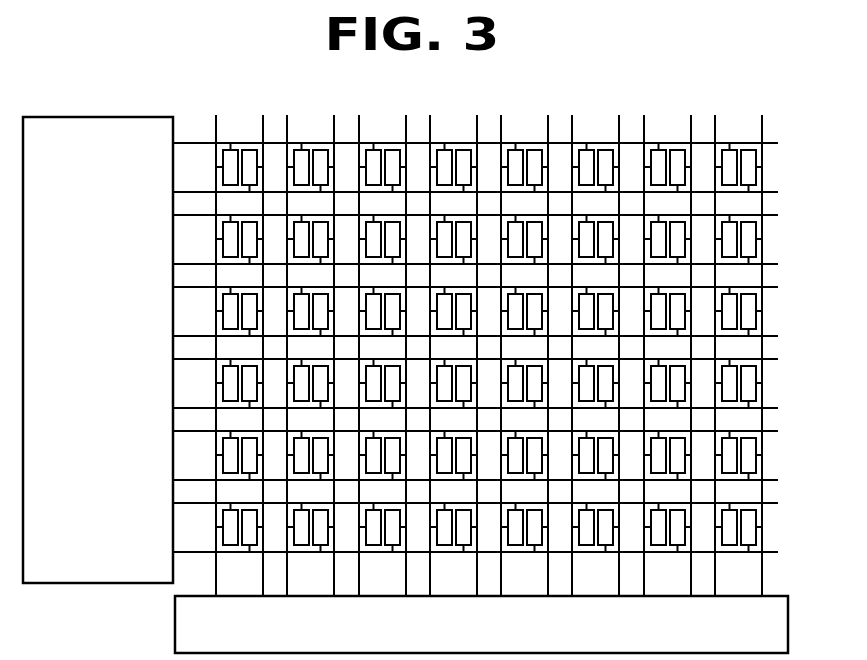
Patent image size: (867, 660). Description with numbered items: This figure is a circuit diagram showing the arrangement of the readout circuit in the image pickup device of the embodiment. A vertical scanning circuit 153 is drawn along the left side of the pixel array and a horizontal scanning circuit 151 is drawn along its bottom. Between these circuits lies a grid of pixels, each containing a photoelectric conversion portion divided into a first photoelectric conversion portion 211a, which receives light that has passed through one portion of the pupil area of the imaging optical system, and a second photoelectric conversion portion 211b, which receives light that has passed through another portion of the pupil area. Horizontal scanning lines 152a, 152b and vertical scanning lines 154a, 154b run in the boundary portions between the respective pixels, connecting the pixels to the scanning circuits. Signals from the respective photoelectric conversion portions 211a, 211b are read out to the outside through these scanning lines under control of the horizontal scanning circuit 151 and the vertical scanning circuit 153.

The horizontal scanning circuit 151 is at (174, 628).
The vertical scanning circuit 153 is at (75, 116).
The horizontal scanning line 152a is at (263, 122).
The horizontal scanning line 152b is at (214, 132).
The vertical scanning line 154a is at (775, 191).
The vertical scanning line 154b is at (768, 142).
The first photoelectric conversion portion 211a is at (247, 151).
The second photoelectric conversion portion 211b is at (229, 151).